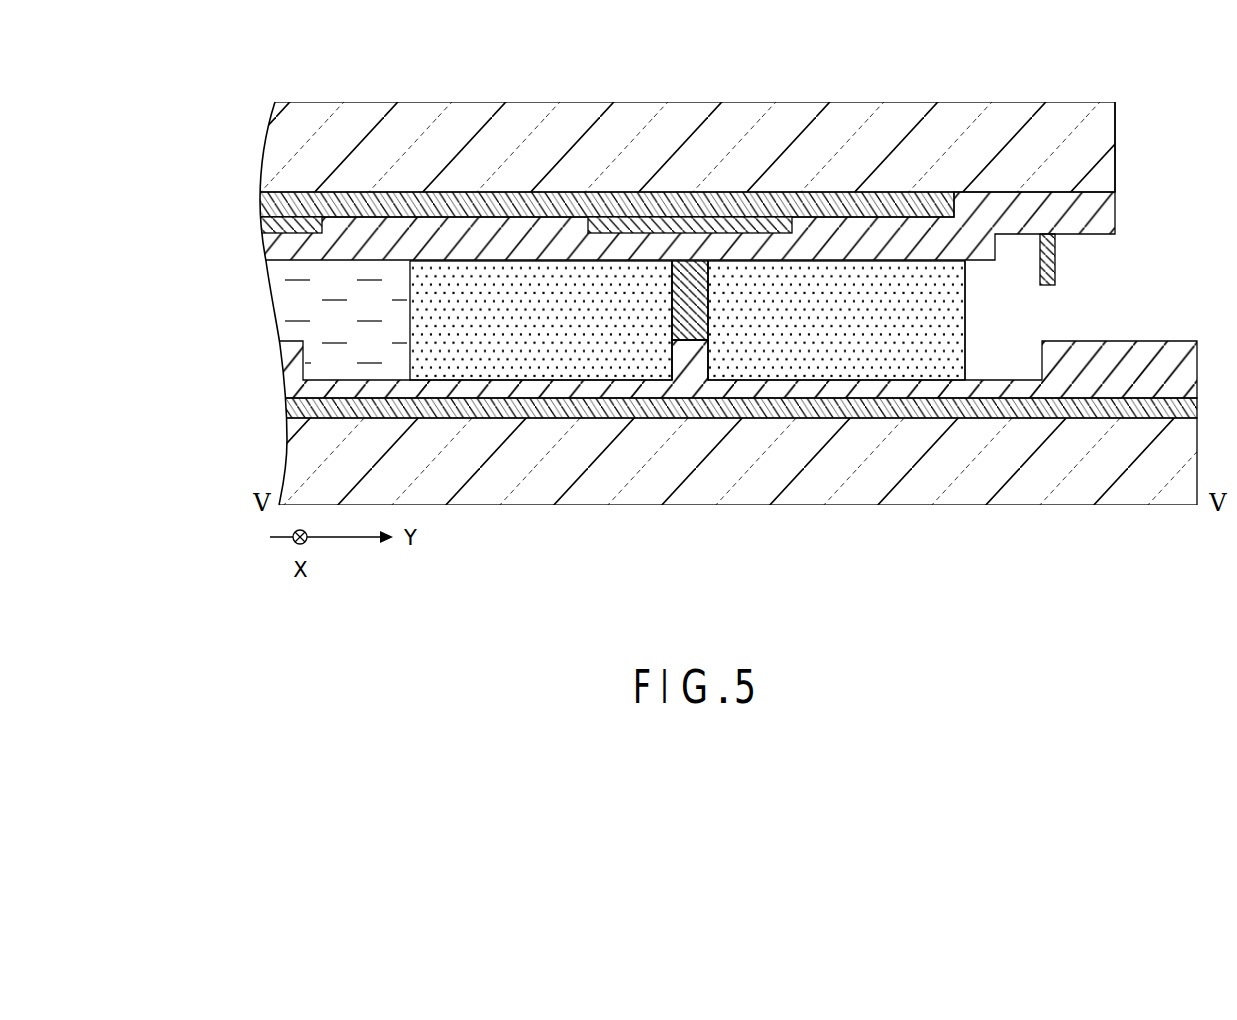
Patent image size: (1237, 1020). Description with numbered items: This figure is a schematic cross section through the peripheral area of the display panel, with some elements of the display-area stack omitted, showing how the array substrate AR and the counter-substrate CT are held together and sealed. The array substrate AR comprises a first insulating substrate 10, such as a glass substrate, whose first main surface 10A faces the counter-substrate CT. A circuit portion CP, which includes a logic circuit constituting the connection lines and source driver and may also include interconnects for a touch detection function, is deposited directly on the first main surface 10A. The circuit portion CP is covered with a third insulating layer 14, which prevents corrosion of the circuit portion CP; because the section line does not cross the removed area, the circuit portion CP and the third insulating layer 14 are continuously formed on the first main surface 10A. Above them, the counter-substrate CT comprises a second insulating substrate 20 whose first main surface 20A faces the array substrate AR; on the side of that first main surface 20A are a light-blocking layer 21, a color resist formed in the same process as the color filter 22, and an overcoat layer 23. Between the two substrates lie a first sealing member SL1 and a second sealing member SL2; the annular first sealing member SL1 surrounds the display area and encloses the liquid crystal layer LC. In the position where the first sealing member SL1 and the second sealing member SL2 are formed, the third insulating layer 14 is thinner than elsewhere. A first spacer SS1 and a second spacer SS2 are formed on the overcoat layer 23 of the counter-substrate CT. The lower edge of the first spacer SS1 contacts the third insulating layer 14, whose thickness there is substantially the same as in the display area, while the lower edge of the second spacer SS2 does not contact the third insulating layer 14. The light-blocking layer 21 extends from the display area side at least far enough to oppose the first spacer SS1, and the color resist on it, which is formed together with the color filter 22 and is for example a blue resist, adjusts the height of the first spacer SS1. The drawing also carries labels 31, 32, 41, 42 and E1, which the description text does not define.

The first insulating substrate 10 is at (591, 490).
The first main surface 10A is at (673, 395).
The third insulating layer 14 is at (1162, 358).
The second insulating substrate 20 is at (516, 118).
The first main surface 20A is at (468, 205).
The light-blocking layer 21 is at (848, 203).
The color filter 22 is at (633, 225).
The overcoat layer 23 is at (1108, 218).
The first side surface of wall 31 is at (722, 286).
The second side surface of wall 32 is at (663, 316).
The wall portion 41 is at (695, 312).
The side surface of second seal 42 is at (985, 305).
The first sealing member SL1 is at (498, 365).
The second sealing member SL2 is at (848, 365).
The first spacer SS1 is at (705, 325).
The second spacer SS2 is at (1057, 262).
The circuit portion CP is at (990, 410).
The counter-substrate CT is at (684, 149).
The array substrate AR is at (703, 428).
The liquid crystal layer LC is at (283, 296).
The end portion of second substrate E1 is at (1128, 156).